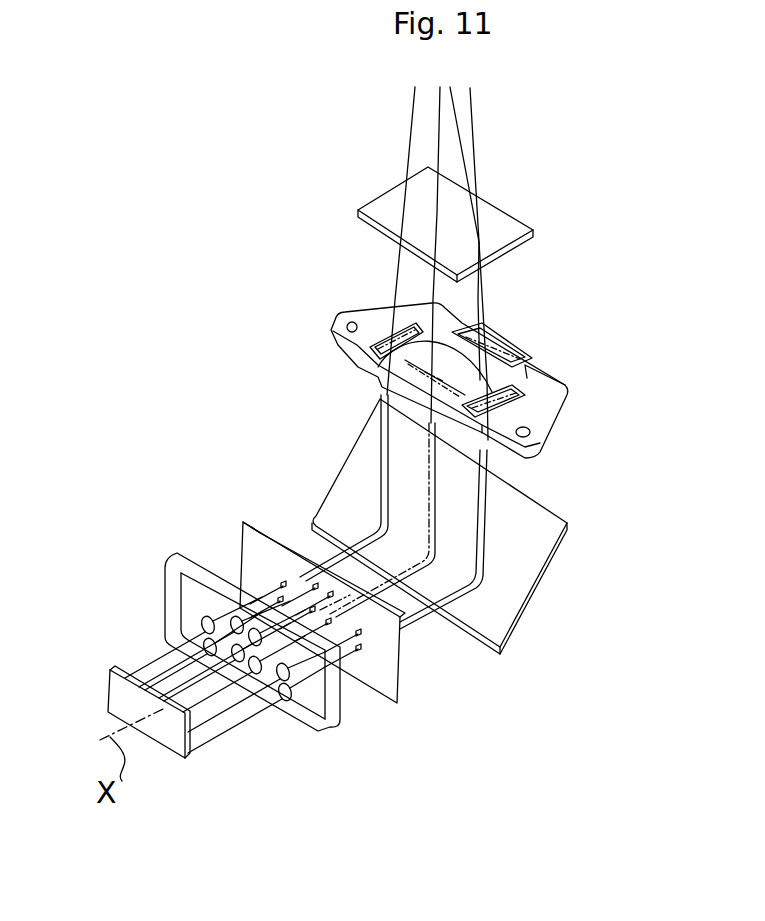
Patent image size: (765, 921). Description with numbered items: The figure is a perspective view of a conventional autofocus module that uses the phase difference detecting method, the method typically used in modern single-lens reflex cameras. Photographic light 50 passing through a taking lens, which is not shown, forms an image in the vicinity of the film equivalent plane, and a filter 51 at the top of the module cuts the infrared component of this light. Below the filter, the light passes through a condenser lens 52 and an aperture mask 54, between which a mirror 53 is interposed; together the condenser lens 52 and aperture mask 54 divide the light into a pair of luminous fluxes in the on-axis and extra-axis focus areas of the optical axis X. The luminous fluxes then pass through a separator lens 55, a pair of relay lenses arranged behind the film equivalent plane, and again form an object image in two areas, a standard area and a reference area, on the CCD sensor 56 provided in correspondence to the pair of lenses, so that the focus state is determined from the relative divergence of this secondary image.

The photographic light 50 is at (495, 128).
The filter 51 is at (388, 203).
The condenser lens 52 is at (358, 365).
The mirror 53 is at (358, 472).
The aperture mask 54 is at (260, 540).
The separator lens 55 is at (202, 592).
The CCD sensor 56 is at (125, 697).